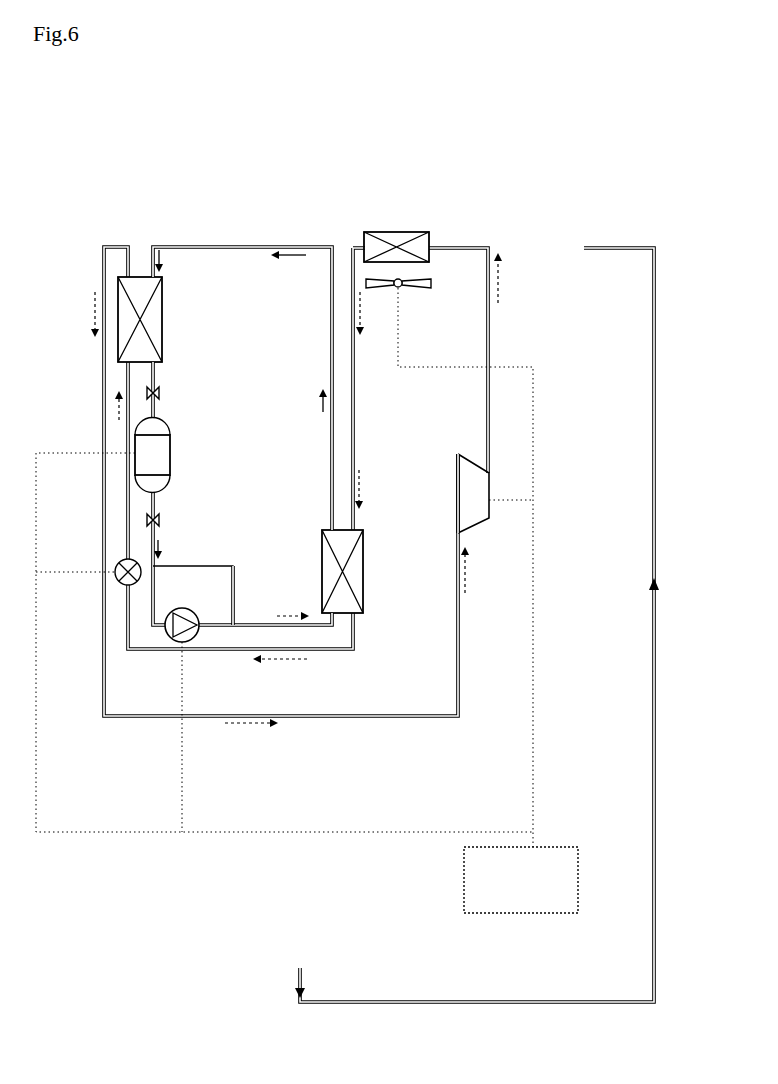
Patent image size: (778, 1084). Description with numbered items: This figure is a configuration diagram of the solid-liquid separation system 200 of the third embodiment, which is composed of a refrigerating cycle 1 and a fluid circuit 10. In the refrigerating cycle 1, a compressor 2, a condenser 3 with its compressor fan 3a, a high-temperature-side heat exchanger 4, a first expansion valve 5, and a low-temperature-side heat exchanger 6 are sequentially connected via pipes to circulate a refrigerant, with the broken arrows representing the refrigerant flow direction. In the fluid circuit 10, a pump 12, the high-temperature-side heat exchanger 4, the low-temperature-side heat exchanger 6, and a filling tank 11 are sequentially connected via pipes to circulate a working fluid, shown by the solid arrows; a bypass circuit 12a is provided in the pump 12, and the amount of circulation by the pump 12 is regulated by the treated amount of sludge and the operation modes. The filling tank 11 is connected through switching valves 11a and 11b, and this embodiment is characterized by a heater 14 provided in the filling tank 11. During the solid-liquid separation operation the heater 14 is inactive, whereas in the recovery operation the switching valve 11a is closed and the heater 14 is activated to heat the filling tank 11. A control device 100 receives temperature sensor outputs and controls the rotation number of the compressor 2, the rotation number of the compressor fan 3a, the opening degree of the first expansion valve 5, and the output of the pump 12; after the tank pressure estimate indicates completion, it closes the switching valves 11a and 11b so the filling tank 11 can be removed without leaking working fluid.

The refrigerating cycle 1 is at (489, 345).
The compressor 2 is at (489, 478).
The condenser 3 is at (408, 232).
The compressor fan 3a is at (398, 288).
The high-temperature-side heat exchanger 4 is at (364, 598).
The first expansion valve 5 is at (116, 585).
The low-temperature-side heat exchanger 6 is at (163, 308).
The fluid circuit 10 is at (187, 247).
The filling tank 11 is at (170, 440).
The switching valve 11a is at (159, 389).
The switching valve 11b is at (159, 516).
The pump 12 is at (196, 612).
The bypass circuit 12a is at (190, 566).
The heater 14 is at (171, 455).
The control device 100 is at (492, 913).
The solid-liquid separation system 200 is at (262, 178).